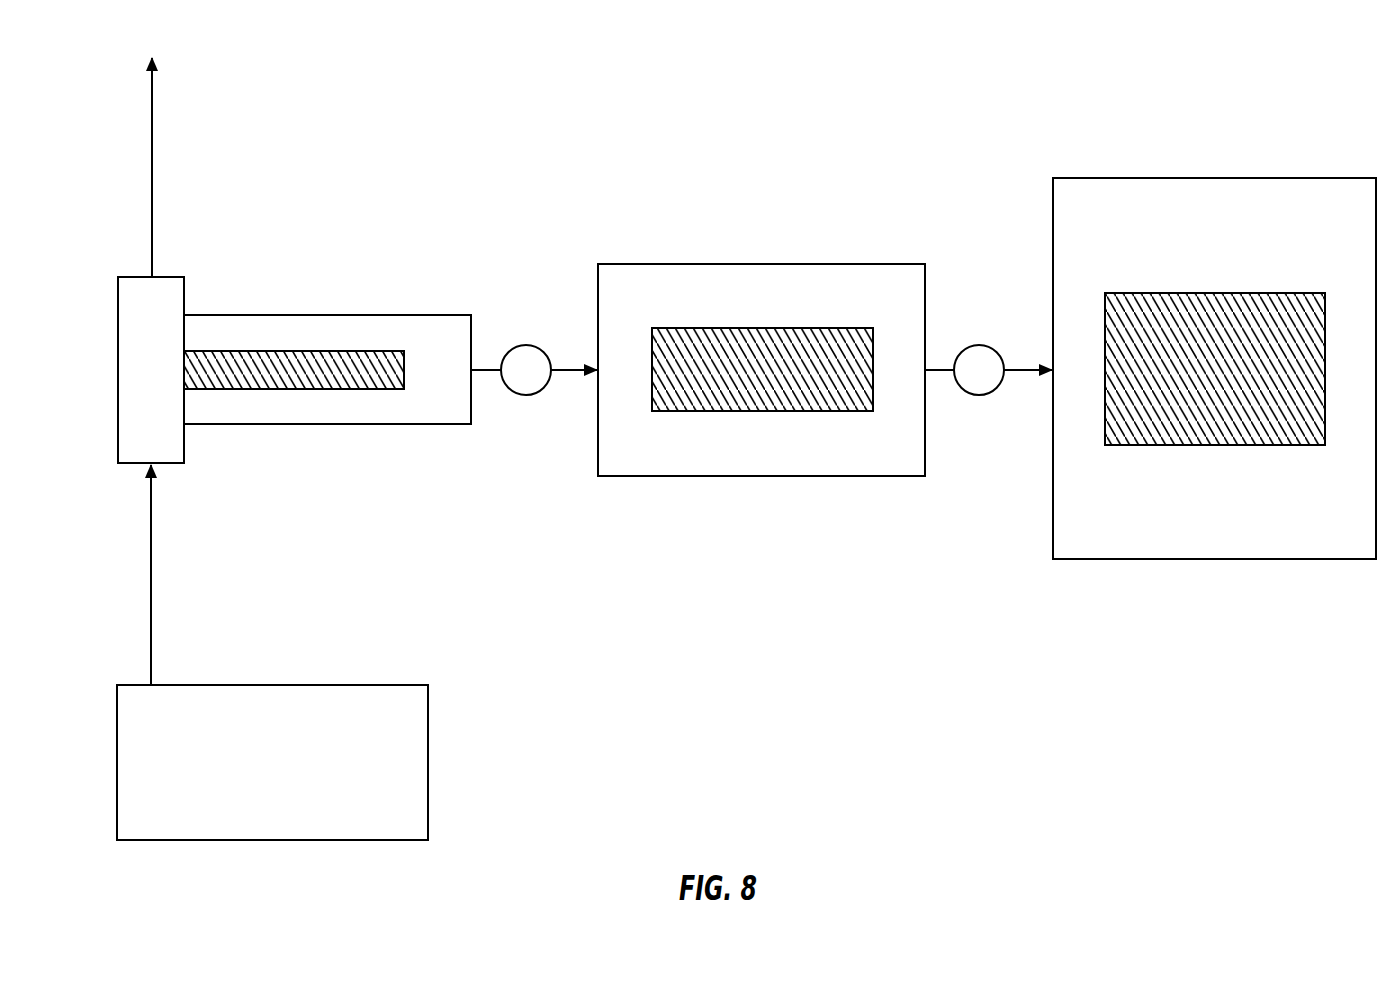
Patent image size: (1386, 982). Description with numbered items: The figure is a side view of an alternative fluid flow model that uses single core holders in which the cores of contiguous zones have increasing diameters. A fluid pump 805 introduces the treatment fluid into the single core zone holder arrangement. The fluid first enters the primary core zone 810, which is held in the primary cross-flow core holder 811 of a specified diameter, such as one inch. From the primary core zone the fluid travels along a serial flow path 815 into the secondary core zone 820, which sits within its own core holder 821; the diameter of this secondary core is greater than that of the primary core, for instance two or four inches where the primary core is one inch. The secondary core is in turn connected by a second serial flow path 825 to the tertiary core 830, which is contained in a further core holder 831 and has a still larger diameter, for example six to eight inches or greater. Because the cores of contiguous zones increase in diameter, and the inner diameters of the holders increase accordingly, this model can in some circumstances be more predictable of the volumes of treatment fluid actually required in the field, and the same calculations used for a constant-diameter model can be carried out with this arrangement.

The fluid pump 805 is at (296, 775).
The primary core zone 810 is at (340, 358).
The primary cross-flow core holder 811 is at (143, 282).
The serial flow path 815 is at (527, 352).
The secondary core zone 820 is at (747, 347).
The core holder 821 is at (793, 285).
The serial flow path 825 is at (980, 395).
The tertiary core 830 is at (1188, 310).
The core holder 831 is at (1183, 200).